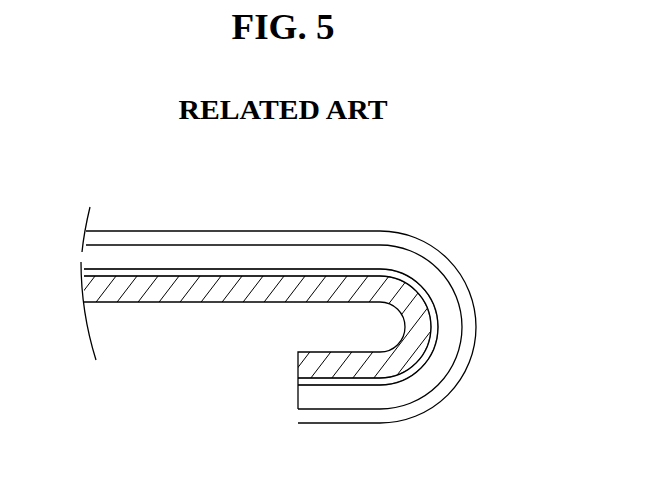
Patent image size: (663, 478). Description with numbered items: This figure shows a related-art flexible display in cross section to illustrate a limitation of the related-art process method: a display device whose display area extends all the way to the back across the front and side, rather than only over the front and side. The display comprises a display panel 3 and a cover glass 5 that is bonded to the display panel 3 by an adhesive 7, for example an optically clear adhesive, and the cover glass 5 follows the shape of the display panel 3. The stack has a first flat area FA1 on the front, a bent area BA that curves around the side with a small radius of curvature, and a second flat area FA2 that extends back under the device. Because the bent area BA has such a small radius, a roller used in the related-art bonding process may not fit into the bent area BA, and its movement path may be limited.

The display panel 3 is at (239, 297).
The cover glass 5 is at (131, 255).
The adhesive 7 is at (186, 276).
The flat area FA1 is at (380, 241).
The flat area FA2 is at (298, 423).
The bent area BA is at (444, 327).